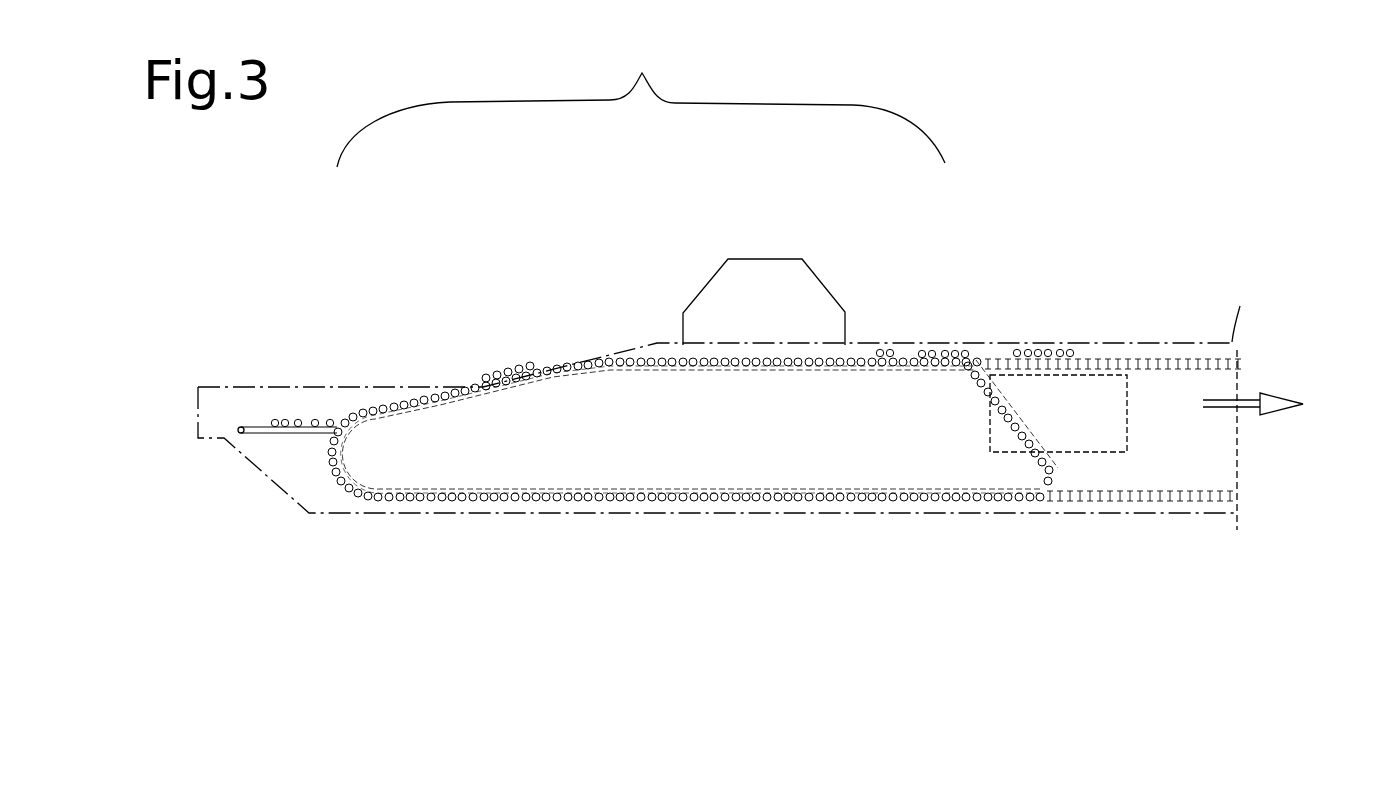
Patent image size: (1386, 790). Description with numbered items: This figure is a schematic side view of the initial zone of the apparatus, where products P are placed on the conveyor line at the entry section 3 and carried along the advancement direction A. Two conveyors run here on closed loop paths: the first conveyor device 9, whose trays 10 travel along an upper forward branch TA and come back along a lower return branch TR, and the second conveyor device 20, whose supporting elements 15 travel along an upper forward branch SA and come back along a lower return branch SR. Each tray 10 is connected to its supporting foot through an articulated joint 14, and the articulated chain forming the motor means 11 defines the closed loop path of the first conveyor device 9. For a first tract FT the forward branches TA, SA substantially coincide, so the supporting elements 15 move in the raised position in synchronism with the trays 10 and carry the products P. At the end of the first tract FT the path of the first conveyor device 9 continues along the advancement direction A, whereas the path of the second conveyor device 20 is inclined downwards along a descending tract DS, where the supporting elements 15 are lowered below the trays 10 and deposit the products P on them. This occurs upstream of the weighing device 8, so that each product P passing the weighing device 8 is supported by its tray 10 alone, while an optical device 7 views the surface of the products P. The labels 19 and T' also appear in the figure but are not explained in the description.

The entry section 3 is at (345, 368).
The optical device 7 is at (774, 293).
The weighing device 8 is at (1110, 390).
The first conveyor device 9 is at (1130, 333).
The tray 10 is at (1095, 358).
The motor means (articulated chain) 11 is at (1238, 358).
The articulated joint 14 is at (1063, 460).
The supporting elements 15 is at (1057, 438).
The pin 19 is at (380, 392).
The second conveyor device 20 is at (975, 335).
The products P is at (317, 422).
The upper forward branch of the tray path TA is at (452, 388).
The upper forward branch of the supporting element path SA is at (583, 370).
The first tract of the forward branches FT is at (641, 103).
The lower return branch of the tray path TR is at (617, 503).
The lower return branch of the supporting element path SR is at (977, 503).
The tape T' is at (857, 500).
The descending tract DS is at (1022, 413).
The advancement direction A is at (1273, 398).